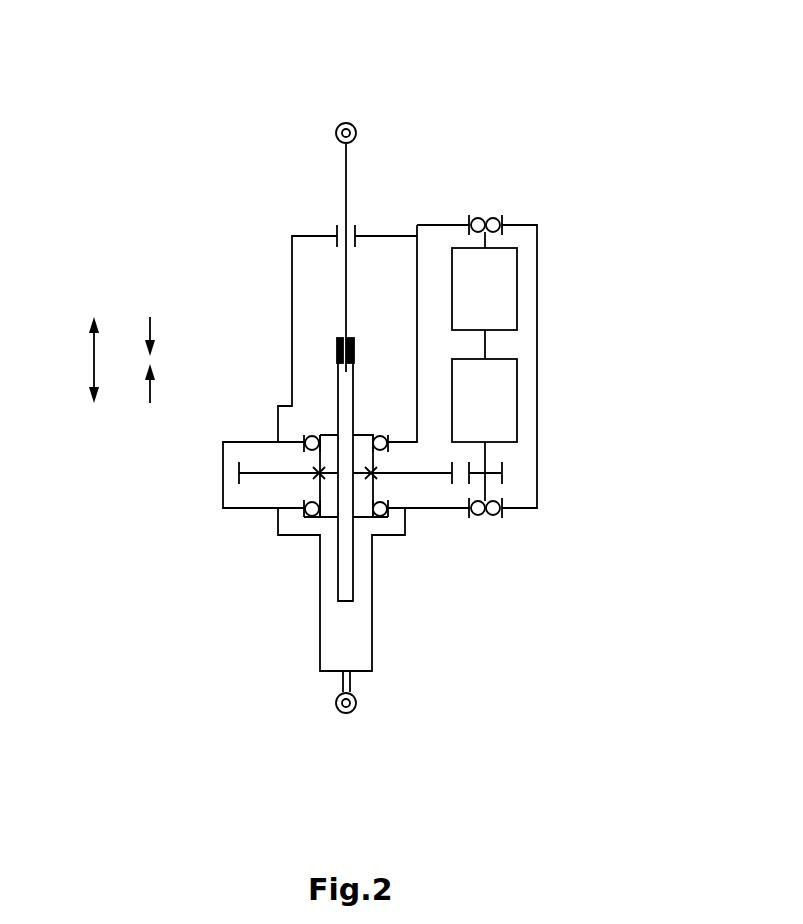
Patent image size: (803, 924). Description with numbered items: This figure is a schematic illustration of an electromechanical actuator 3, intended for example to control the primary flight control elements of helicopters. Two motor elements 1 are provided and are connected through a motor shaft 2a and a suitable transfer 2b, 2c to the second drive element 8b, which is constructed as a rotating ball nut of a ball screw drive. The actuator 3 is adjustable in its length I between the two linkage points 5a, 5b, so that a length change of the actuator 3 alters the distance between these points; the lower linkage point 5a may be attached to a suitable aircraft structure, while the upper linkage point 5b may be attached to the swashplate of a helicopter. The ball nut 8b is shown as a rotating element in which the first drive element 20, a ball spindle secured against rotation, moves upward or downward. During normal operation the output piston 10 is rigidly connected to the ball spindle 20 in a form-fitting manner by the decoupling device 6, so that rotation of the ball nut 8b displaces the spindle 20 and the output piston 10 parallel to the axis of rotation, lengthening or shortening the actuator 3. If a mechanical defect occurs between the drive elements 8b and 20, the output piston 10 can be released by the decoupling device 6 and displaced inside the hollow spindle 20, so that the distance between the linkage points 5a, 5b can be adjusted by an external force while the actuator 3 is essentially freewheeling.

The electromechanical actuator 3 is at (597, 96).
The upper linkage point 5b is at (356, 135).
The lower linkage point 5a is at (356, 706).
The output piston 10 is at (346, 268).
The decoupling device 6 is at (337, 355).
The first drive element 20 is at (336, 417).
The motor elements 1 is at (502, 280).
The motor shaft 2a is at (500, 457).
The transfer 2b is at (502, 475).
The transfer 2c is at (430, 475).
The second drive element 8b is at (328, 510).
The length I is at (122, 360).